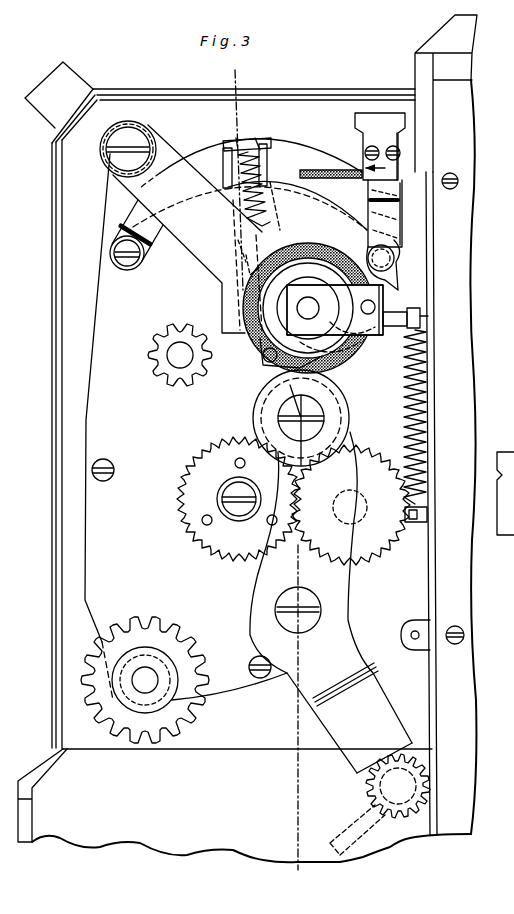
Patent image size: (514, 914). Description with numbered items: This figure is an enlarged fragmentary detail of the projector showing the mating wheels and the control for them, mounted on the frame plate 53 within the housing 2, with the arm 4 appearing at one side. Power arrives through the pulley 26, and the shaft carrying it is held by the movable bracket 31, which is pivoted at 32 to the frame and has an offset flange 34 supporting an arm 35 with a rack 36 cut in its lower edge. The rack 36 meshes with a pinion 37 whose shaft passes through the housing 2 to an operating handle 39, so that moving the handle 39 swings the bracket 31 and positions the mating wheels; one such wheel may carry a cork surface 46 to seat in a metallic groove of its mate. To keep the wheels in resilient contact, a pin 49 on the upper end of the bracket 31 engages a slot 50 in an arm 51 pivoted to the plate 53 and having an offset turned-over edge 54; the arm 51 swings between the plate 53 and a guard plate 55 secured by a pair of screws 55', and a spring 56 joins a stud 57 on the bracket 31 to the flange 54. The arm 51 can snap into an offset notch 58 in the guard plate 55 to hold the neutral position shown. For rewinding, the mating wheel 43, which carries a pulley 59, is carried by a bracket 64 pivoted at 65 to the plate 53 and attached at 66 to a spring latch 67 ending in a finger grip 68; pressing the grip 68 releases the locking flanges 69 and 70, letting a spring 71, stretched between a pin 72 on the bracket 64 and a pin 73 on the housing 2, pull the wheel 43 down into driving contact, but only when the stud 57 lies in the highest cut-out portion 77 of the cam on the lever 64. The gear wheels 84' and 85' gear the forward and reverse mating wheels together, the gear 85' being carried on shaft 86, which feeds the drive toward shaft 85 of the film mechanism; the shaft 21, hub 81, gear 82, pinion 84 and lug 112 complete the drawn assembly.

The housing 2 is at (62, 588).
The arm 4 is at (210, 62).
The shaft 21 is at (150, 678).
The pulley 26 is at (346, 400).
The movable bracket 31 is at (301, 603).
The pivot 32 is at (290, 607).
The offset flange 34 is at (380, 682).
The arm 35 is at (390, 708).
The rack 36 is at (385, 758).
The pinion 37 is at (408, 820).
The operating handle 39 is at (360, 850).
The mating wheel 43 is at (305, 245).
The cork surface 46 is at (297, 907).
The pin 49 is at (246, 262).
The slot 50 is at (238, 241).
The arm 51 is at (276, 190).
The frame plate 53 is at (115, 370).
The offset turned-over edge 54 is at (247, 140).
The guard plate 55 is at (221, 224).
The screws 55' is at (109, 247).
The spring 56 is at (270, 182).
The stud 57 is at (262, 350).
The offset notch 58 is at (267, 151).
The pulley 59 is at (316, 282).
The bracket 64 is at (230, 285).
The pivot 65 is at (128, 127).
The pivotal attachment 66 is at (404, 235).
The spring latch 67 is at (403, 183).
The finger grip 68 is at (373, 114).
The locking flange 69 is at (367, 185).
The locking flange 70 is at (253, 184).
The spring 71 is at (420, 392).
The pin 72 is at (428, 317).
The pin 73 is at (428, 519).
The cut-out portion 77 is at (330, 331).
The hub 81 is at (178, 665).
The gear 82 is at (118, 630).
The pinion 84 is at (180, 345).
The gear wheel 84' is at (239, 488).
The shaft 85 is at (152, 385).
The gear wheel 85' is at (370, 423).
The shaft 86 is at (358, 494).
The lug 112 is at (458, 622).